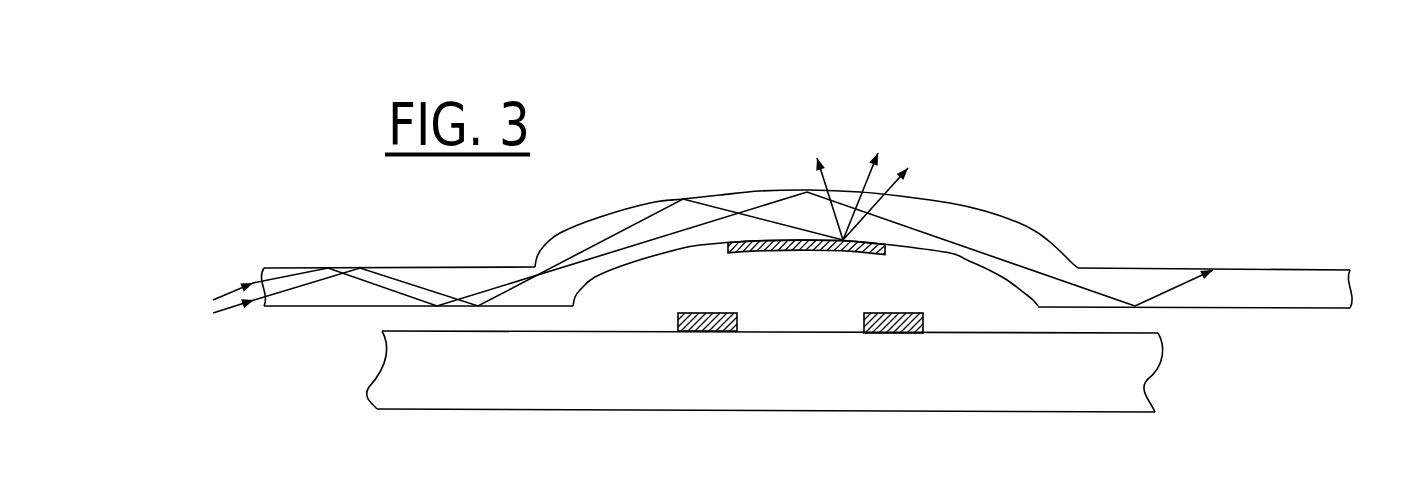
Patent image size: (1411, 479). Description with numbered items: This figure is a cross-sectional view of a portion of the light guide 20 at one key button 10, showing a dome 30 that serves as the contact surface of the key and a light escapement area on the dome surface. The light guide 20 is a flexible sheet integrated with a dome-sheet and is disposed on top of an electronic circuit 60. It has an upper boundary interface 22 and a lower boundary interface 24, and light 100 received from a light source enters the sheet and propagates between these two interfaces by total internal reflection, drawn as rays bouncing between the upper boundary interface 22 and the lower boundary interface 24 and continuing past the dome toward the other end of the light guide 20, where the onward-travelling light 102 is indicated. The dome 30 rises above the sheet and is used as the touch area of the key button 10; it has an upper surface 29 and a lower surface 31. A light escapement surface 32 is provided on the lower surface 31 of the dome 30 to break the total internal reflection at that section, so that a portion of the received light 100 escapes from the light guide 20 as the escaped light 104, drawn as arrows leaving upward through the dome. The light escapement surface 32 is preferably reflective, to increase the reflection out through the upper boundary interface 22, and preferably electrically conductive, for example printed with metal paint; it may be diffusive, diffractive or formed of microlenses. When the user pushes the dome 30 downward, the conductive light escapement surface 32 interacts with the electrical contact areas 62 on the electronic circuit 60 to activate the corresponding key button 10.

The key button 10 is at (925, 107).
The light guide 20 is at (828, 283).
The upper boundary interface 22 is at (342, 267).
The lower boundary interface 24 is at (342, 307).
The upper surface of the dome 29 is at (1032, 225).
The dome 30 is at (815, 248).
The lower surface of the dome 31 is at (1006, 274).
The light escapement surface 32 is at (807, 253).
The electronic circuit 60 is at (1137, 373).
The electrical contact areas 62 is at (700, 313).
The light 100 is at (201, 294).
The transmitted light 102 is at (1168, 293).
The escaped light 104 is at (872, 173).